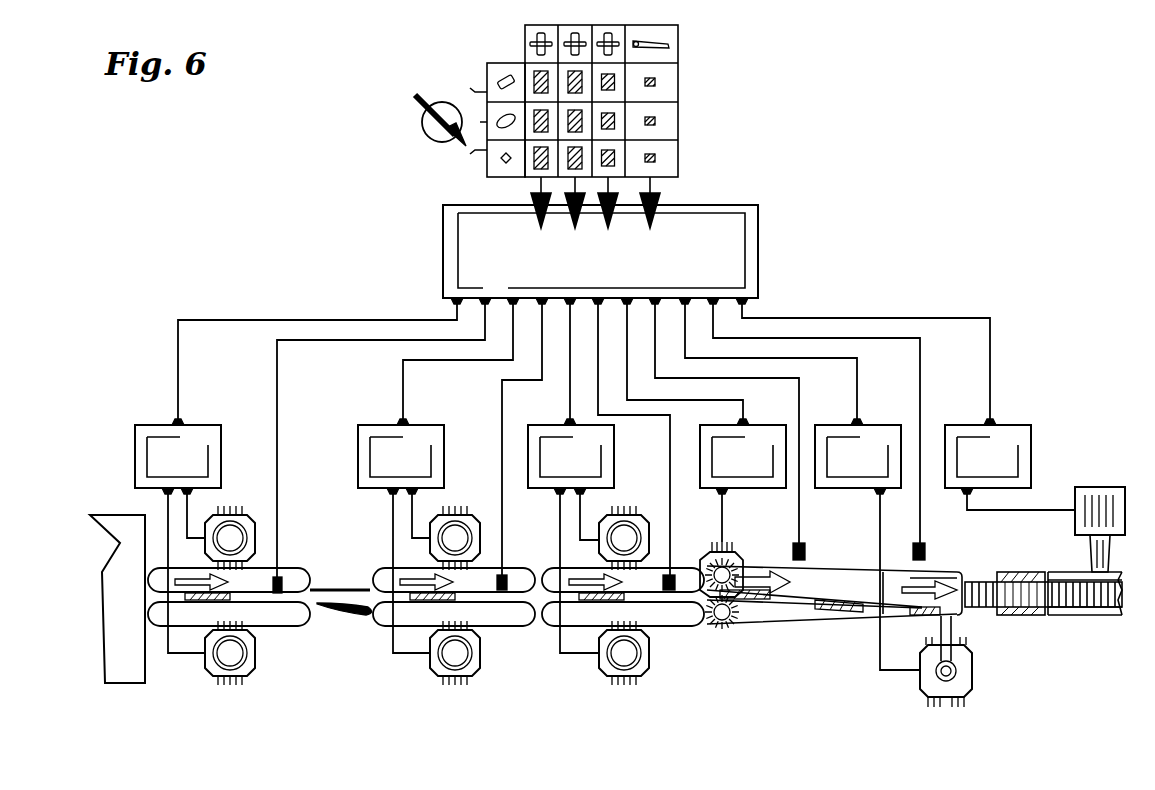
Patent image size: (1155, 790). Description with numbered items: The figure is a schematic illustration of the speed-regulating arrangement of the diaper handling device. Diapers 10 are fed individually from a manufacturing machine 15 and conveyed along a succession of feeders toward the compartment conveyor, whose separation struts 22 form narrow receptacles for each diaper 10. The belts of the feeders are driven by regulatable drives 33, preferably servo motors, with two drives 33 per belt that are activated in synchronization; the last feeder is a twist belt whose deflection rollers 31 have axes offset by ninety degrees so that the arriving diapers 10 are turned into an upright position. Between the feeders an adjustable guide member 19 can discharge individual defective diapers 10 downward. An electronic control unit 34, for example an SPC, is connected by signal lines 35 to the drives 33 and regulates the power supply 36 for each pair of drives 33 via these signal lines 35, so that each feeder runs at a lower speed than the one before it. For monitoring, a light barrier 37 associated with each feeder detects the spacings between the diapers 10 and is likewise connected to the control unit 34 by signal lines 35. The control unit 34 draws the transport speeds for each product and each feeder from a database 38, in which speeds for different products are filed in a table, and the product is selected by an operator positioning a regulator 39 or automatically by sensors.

The diaper 10 is at (1010, 617).
The manufacturing machine 15 is at (122, 633).
The adjustable guide member 19 is at (342, 620).
The separation strut 22 is at (973, 577).
The deflection roller 31 is at (730, 573).
The drive 33 is at (230, 538).
The electronic control unit 34 is at (781, 239).
The signal line 35 is at (237, 318).
The power supply 36 is at (178, 347).
The light barrier 37 is at (233, 658).
The database 38 is at (717, 93).
The regulator 39 is at (427, 137).